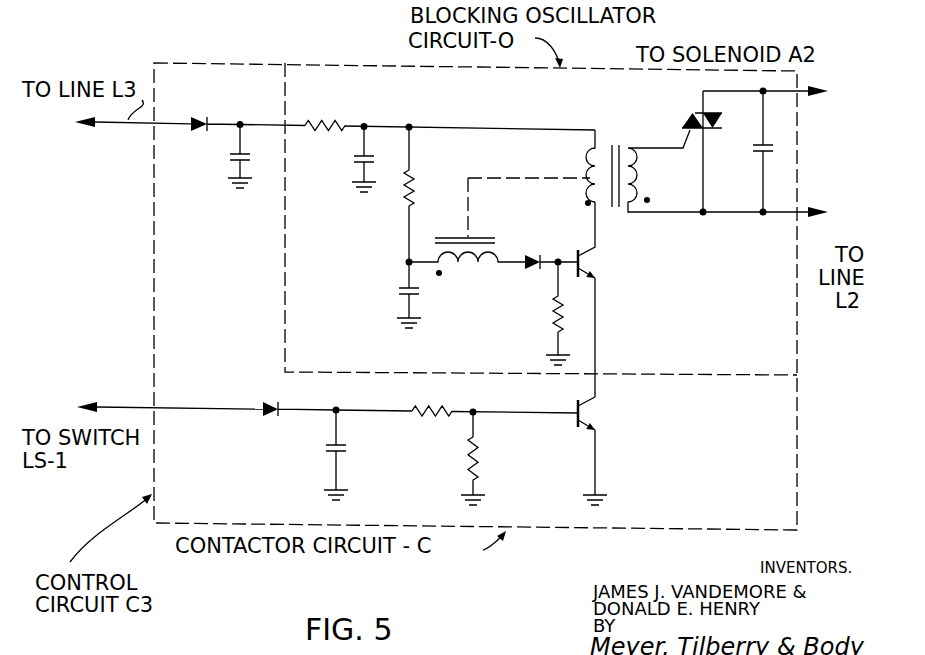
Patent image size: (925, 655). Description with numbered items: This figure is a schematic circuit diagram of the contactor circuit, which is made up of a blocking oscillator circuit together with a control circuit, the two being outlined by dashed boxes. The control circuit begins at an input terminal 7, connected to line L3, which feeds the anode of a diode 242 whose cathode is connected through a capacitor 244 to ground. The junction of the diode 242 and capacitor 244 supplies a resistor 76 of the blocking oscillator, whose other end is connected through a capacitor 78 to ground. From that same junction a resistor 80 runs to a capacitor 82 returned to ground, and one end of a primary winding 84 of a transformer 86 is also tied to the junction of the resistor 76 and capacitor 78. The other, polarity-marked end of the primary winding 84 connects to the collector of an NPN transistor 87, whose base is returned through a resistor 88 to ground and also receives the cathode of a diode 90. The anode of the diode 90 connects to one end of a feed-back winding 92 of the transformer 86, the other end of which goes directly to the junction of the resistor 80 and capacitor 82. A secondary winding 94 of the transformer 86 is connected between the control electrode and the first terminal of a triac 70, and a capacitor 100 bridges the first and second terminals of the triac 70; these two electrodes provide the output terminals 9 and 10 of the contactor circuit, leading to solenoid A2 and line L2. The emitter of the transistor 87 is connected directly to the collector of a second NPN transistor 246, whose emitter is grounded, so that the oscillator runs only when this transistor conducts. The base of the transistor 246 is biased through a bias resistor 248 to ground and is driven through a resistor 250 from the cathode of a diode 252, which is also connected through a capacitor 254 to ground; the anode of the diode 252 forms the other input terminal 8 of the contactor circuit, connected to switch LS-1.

The input terminal 7 is at (106, 128).
The input terminal 8 is at (118, 403).
The output terminal 9 is at (832, 72).
The output terminal 10 is at (826, 250).
The triac 70 is at (688, 112).
The resistor 76 is at (308, 124).
The capacitor 78 is at (360, 166).
The resistor 80 is at (405, 200).
The capacitor 82 is at (401, 295).
The primary winding 84 is at (590, 168).
The transformer 86 is at (628, 153).
The NPN transistor 87 is at (596, 266).
The resistor 88 is at (555, 327).
The diode 90 is at (525, 271).
The feedback winding 92 is at (470, 270).
The secondary winding 94 is at (648, 180).
The capacitor 100 is at (762, 153).
The diode 242 is at (196, 116).
The capacitor 244 is at (233, 163).
The NPN transistor 246 is at (599, 416).
The bias resistor 248 is at (478, 468).
The resistor 250 is at (433, 431).
The diode 252 is at (272, 418).
The capacitor 254 is at (341, 453).